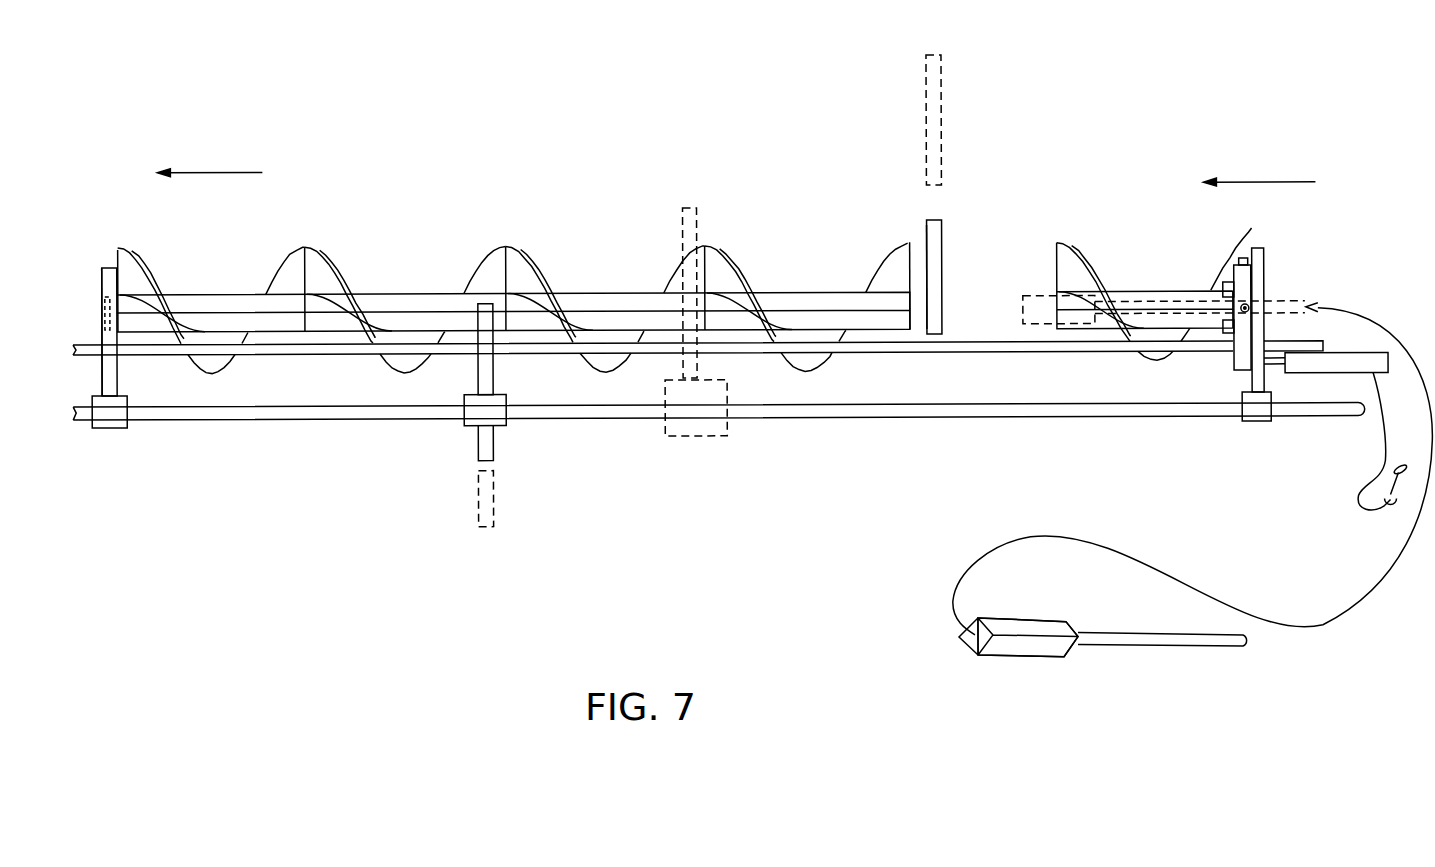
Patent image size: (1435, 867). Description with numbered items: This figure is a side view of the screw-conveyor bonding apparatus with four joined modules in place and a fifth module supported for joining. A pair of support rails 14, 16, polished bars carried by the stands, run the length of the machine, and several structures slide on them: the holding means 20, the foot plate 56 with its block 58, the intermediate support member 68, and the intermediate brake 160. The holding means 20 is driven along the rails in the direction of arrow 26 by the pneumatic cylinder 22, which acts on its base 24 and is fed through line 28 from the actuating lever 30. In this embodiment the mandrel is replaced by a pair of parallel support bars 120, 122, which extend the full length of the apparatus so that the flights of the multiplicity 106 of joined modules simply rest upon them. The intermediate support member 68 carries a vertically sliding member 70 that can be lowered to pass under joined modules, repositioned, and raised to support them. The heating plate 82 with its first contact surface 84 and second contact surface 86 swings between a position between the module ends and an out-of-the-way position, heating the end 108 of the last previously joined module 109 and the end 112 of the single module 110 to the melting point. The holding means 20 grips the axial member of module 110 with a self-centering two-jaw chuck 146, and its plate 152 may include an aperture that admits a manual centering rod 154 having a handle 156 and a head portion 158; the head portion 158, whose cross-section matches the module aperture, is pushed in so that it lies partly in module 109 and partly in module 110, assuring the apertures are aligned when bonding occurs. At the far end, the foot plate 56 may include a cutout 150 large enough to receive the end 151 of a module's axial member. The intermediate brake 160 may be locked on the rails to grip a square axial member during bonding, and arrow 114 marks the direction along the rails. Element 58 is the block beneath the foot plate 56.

The support rail 14 is at (719, 438).
The support rail 16 is at (202, 413).
The holding means 20 is at (1257, 307).
The pneumatic cylinder 22 is at (1345, 367).
The base 24 is at (1250, 414).
The arrow 26 is at (1275, 186).
The line 28 is at (1373, 464).
The actuating lever 30 is at (1393, 513).
The foot plate 56 is at (100, 296).
The mounting block 58 is at (112, 422).
The intermediate support member 68 is at (497, 421).
The vertically sliding member 70 is at (490, 448).
The heating plate 82 is at (947, 146).
The first contact surface 84 is at (927, 238).
The second contact surface 86 is at (942, 238).
The multiplicity of joined modules 106 is at (496, 261).
The end of last joined module 108 is at (913, 320).
The last previously joined module 109 is at (542, 314).
The single module 110 is at (1078, 268).
The end of module 112 is at (1055, 317).
The direction of conveyance arrow 114 is at (242, 173).
The parallel support bar 120 is at (698, 373).
The parallel support bar 122 is at (752, 352).
The self-centering two-jaw chuck 146 is at (1227, 291).
The cutout 150 is at (104, 306).
The end of axial member 151 is at (102, 300).
The plate 152 is at (1264, 256).
The manual centering rod 154 is at (1037, 626).
The handle 156 is at (1207, 649).
The head portion 158 is at (1037, 301).
The intermediate brake 160 is at (668, 436).